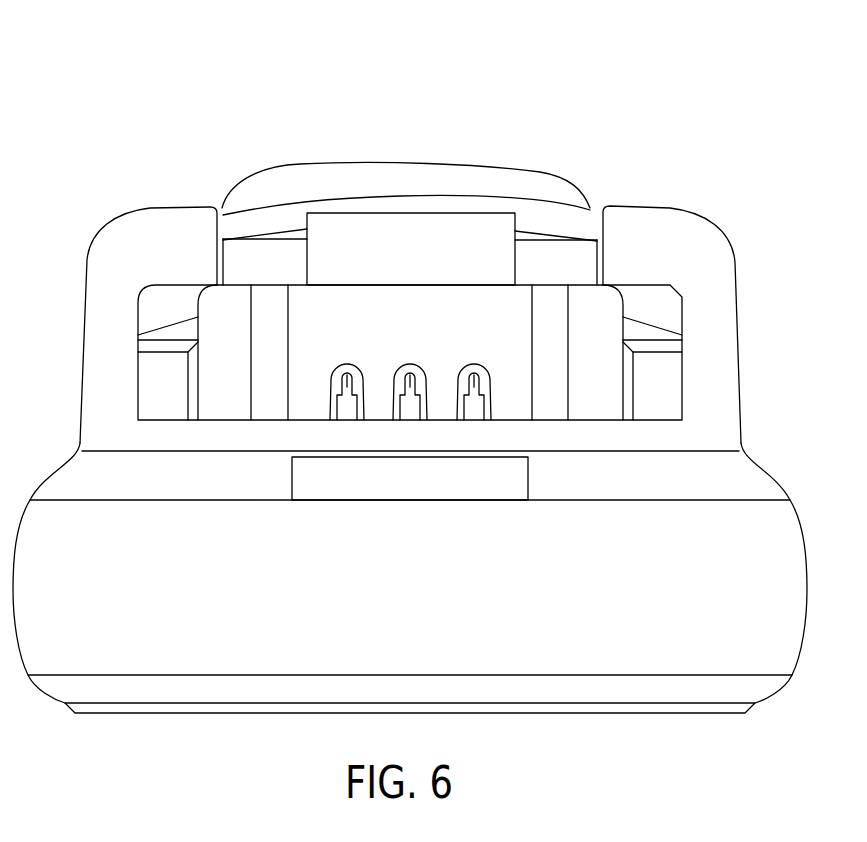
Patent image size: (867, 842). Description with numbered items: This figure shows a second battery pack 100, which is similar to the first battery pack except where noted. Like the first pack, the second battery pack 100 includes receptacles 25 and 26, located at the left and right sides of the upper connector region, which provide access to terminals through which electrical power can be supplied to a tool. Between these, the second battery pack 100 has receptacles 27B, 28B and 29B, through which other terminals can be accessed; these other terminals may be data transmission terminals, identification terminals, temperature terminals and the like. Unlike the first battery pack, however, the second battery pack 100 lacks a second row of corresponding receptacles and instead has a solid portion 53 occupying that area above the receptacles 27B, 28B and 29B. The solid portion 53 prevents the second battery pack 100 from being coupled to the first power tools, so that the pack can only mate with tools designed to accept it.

The second battery pack 100 is at (716, 100).
The receptacle 25 is at (262, 312).
The receptacle 26 is at (552, 302).
The receptacle 27B is at (343, 363).
The receptacle 28B is at (407, 363).
The receptacle 29B is at (472, 363).
The solid portion 53 is at (500, 297).